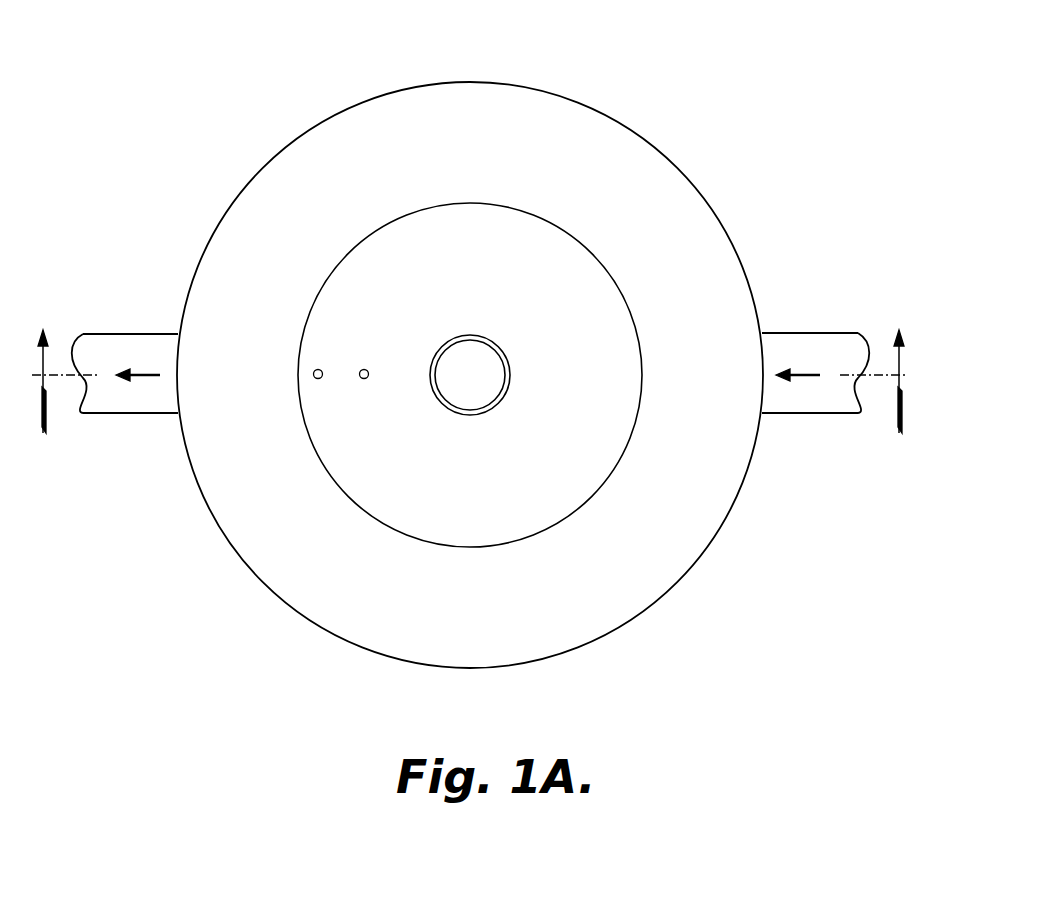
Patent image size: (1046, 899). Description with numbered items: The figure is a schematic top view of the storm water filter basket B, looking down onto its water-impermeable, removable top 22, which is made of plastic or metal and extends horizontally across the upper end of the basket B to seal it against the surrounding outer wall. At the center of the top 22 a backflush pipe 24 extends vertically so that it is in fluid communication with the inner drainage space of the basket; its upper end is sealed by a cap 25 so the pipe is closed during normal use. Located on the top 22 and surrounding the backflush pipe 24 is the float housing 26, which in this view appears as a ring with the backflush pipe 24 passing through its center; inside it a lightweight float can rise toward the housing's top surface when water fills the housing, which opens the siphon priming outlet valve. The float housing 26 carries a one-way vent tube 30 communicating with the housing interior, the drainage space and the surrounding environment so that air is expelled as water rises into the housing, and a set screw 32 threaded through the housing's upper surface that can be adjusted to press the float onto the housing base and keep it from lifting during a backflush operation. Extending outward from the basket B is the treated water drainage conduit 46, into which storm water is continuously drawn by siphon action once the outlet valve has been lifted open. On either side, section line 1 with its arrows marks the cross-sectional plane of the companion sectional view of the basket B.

The basket B is at (730, 98).
The top 22 is at (730, 278).
The backflush pipe 24 is at (437, 341).
The cap 25 is at (483, 385).
The float housing 26 is at (603, 453).
The one-way vent tube 30 is at (314, 379).
The set screw 32 is at (360, 379).
The treated water drainage conduit 46 is at (137, 334).
The section line 1 is at (473, 385).